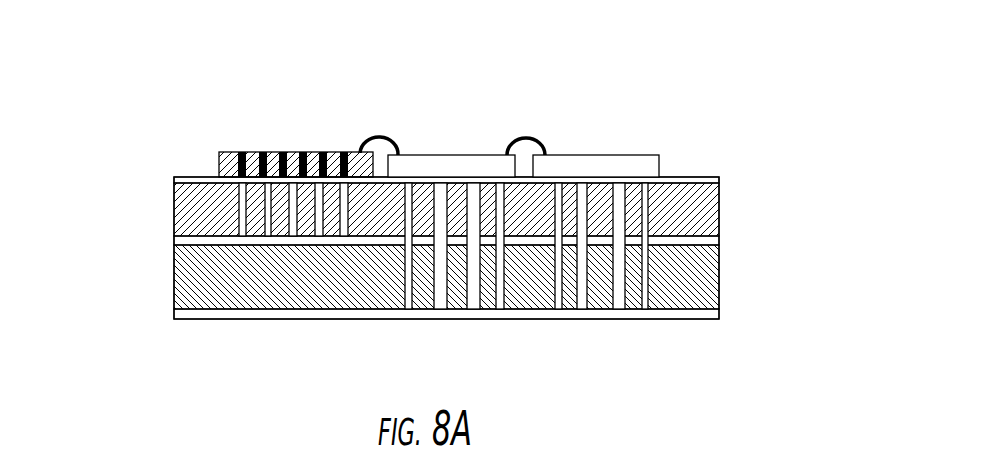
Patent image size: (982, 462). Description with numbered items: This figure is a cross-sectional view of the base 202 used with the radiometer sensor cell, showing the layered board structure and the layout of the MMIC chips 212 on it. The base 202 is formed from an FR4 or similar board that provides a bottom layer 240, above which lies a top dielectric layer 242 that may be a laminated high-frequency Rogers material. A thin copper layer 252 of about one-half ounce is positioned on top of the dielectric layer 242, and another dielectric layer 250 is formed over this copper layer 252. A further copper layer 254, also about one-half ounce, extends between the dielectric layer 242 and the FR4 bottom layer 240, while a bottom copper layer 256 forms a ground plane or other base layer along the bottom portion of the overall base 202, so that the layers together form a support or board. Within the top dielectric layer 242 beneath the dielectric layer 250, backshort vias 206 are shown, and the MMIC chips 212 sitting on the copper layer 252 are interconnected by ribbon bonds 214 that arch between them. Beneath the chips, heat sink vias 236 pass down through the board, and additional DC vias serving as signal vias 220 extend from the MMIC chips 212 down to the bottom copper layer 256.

The base 202 is at (158, 268).
The backshort vias 206 is at (287, 236).
The MMIC chips 212 is at (560, 155).
The ribbon bonds 214 is at (517, 140).
The signal vias 220 is at (647, 309).
The heat sink vias 236 is at (468, 309).
The bottom layer 240 is at (708, 280).
The top dielectric layer 242 is at (712, 212).
The dielectric layer 250 is at (219, 163).
The copper layer 252 is at (718, 181).
The copper layer 254 is at (712, 243).
The copper layer 256 is at (710, 315).